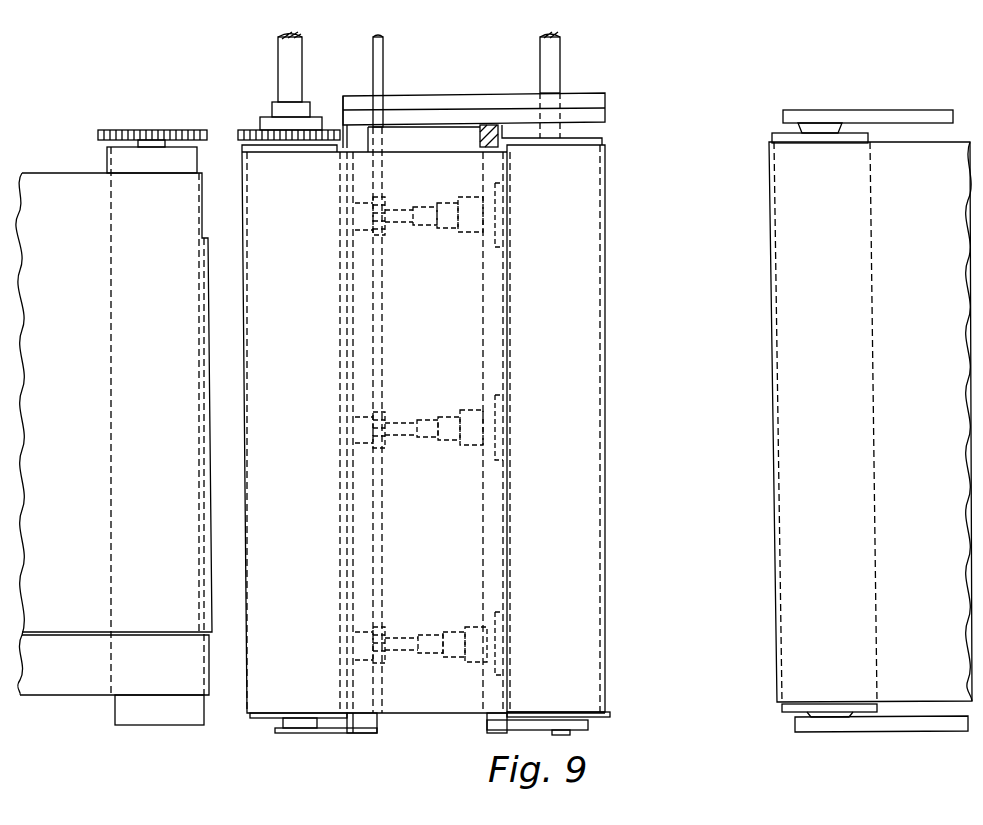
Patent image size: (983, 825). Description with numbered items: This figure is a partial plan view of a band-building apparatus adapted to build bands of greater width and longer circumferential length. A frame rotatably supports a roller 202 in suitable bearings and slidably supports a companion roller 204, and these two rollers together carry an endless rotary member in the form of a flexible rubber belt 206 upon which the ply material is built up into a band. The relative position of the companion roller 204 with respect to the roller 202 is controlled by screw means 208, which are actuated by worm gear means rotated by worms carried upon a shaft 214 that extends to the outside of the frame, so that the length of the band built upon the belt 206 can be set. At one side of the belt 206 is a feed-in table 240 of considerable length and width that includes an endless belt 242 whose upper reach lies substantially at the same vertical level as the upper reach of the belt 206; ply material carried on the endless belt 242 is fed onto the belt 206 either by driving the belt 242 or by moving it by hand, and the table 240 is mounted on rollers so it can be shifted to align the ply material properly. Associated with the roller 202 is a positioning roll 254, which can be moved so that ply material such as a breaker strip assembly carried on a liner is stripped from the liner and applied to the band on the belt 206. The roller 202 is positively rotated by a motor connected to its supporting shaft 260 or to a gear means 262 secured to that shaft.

The roller 202 is at (258, 720).
The companion roller 204 is at (595, 143).
The flexible rubber belt 206 is at (605, 320).
The screw means 208 is at (445, 230).
The shaft 214 is at (378, 78).
The feed-in table 240 is at (870, 723).
The endless belt 242 is at (777, 687).
The positioning roll 254 is at (173, 714).
The shaft 260 is at (287, 69).
The gear means 262 is at (245, 127).